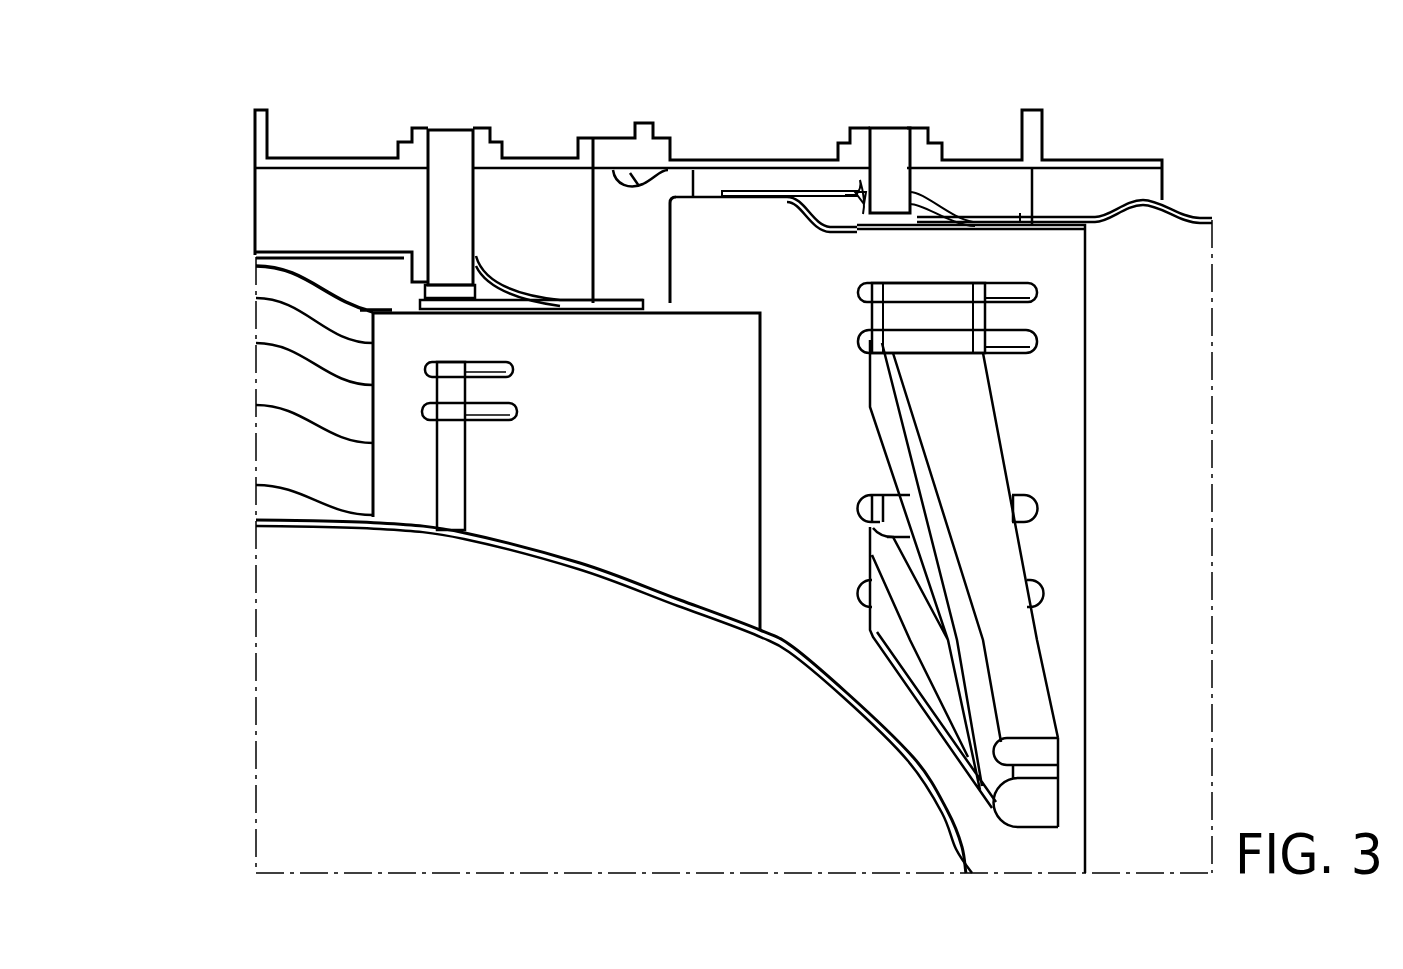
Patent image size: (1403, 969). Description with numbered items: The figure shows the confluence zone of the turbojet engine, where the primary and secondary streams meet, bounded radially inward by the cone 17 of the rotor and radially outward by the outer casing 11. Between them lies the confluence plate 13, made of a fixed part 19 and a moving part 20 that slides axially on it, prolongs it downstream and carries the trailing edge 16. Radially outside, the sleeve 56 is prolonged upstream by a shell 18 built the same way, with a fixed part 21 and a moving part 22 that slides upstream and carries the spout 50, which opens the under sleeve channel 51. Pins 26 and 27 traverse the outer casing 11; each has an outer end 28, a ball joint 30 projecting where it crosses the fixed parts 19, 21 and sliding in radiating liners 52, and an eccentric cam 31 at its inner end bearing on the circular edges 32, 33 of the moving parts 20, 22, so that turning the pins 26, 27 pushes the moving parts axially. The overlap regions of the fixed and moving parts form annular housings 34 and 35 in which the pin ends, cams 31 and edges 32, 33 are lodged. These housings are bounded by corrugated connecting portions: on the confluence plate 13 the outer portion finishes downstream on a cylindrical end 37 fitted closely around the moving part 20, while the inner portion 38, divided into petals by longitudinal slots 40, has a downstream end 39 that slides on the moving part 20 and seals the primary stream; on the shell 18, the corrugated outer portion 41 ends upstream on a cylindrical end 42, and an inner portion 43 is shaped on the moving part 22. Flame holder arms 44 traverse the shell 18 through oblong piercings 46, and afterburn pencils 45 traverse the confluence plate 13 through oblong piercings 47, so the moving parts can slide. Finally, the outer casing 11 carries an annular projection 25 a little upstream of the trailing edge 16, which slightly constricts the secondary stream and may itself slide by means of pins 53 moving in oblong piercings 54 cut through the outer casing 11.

The outer casing 11 is at (285, 152).
The confluence plate 13 is at (345, 162).
The trailing edge 16 is at (762, 325).
The cone 17 is at (812, 638).
The shell 18 is at (1017, 200).
The fixed part 19 is at (417, 272).
The moving part 20 is at (598, 310).
The fixed part 21 is at (790, 192).
The moving part 22 is at (711, 200).
The projection 25 is at (633, 182).
The pin 26 is at (452, 128).
The pin 27 is at (900, 126).
The outer end 28 is at (420, 135).
The ball joint 30 is at (357, 205).
The cam 31 is at (455, 293).
The circular edge 32 is at (420, 300).
The circular edge 33 is at (862, 215).
The annular housing 34 is at (480, 300).
The annular housing 35 is at (505, 262).
The cylindrical end 37 is at (613, 300).
The inner portion 38 is at (280, 447).
The downstream end 39 is at (385, 300).
The longitudinal slots 40 is at (285, 400).
The outer portion 41 is at (1010, 215).
The cylindrical end 42 is at (780, 190).
The inner portion 43 is at (795, 232).
The flame holder arm 44 is at (1015, 638).
The afterburn pencil 45 is at (460, 503).
The oblong piercing 46 is at (1005, 355).
The oblong piercing 47 is at (485, 412).
The spout 50 is at (672, 200).
The under sleeve channel 51 is at (815, 210).
The radiating liner 52 is at (425, 255).
The pin 53 is at (643, 122).
The oblong piercing 54 is at (583, 138).
The sleeve 56 is at (1177, 197).